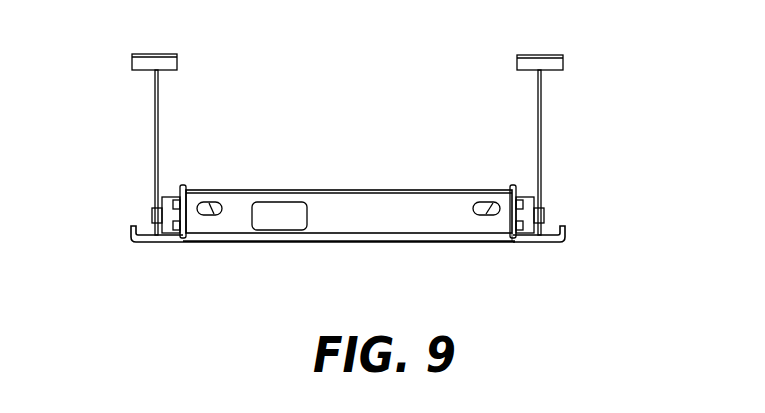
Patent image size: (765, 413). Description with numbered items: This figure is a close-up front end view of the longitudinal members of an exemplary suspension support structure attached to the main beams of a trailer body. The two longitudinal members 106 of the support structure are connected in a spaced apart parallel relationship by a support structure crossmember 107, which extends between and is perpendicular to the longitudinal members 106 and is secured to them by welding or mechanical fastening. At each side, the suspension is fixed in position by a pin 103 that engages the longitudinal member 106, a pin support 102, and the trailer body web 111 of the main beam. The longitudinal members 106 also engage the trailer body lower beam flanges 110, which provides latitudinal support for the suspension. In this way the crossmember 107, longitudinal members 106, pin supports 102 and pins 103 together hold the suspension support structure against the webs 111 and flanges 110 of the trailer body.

The pin support 102 is at (173, 192).
The pin 103 is at (151, 203).
The longitudinal member 106 is at (151, 246).
The support structure crossmember 107 is at (317, 189).
The trailer body lower beam flange 110 is at (527, 248).
The trailer body web 111 is at (161, 101).